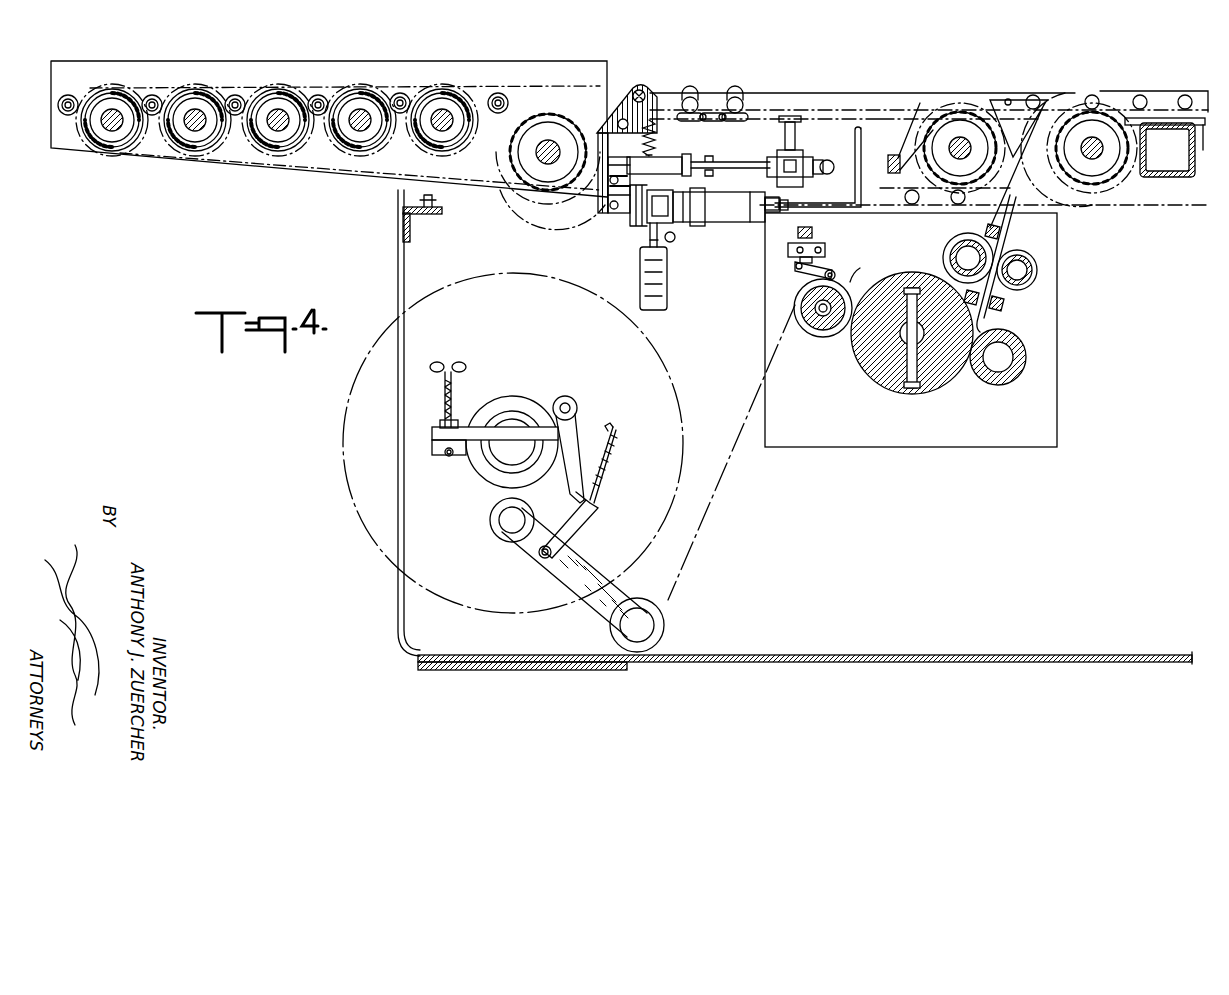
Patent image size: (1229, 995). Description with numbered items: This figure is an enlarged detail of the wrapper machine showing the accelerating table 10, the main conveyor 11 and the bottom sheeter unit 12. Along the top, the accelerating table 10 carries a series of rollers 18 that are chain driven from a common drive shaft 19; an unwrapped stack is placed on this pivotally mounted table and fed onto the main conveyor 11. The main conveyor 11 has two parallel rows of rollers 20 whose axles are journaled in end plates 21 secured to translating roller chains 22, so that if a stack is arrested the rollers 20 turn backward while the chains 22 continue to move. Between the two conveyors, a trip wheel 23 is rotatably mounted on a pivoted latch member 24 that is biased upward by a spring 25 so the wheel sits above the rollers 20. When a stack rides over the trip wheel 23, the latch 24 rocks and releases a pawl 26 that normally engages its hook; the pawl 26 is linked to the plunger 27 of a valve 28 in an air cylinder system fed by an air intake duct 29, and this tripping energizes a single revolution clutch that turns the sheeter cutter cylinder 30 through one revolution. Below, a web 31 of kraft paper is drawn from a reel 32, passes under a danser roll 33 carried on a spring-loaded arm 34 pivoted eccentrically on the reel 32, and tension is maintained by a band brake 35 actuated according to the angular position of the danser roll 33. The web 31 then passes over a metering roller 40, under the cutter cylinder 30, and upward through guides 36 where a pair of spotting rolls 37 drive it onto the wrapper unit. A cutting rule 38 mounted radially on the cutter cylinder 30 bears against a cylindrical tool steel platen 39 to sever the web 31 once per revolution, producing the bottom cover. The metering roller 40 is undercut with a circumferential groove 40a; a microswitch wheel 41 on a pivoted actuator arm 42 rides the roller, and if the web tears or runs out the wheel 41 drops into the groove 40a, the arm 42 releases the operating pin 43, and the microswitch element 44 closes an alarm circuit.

The accelerating table 10 is at (383, 45).
The main conveyor 11 is at (740, 38).
The bottom sheeter unit 12 is at (386, 590).
The rollers 18 is at (265, 95).
The common drive shaft 19 is at (548, 150).
The rollers 20 is at (722, 100).
The end plates 21 is at (688, 100).
The translating roller chains 22 is at (720, 112).
The trip wheel 23 is at (644, 92).
The pivoted latch member 24 is at (615, 120).
The spring 25 is at (658, 140).
The pawl 26 is at (600, 165).
The plunger 27 is at (622, 212).
The valve 28 is at (680, 222).
The air intake duct 29 is at (675, 242).
The sheeter cutter cylinder 30 is at (890, 378).
The web 31 is at (712, 523).
The reel 32 is at (368, 545).
The danser roll 33 is at (665, 627).
The arm 34 is at (595, 598).
The band brake 35 is at (530, 405).
The guides 36 is at (1012, 213).
The spotting rolls 37 is at (1038, 272).
The cutting rule 38 is at (912, 286).
The cylindrical tool steel platen 39 is at (1012, 350).
The metering roller 40 is at (823, 337).
The circumferential groove 40a is at (842, 296).
The microswitch wheel 41 is at (834, 270).
The pivoted actuator arm 42 is at (800, 274).
The operating pin 43 is at (812, 243).
The microswitch element 44 is at (788, 250).